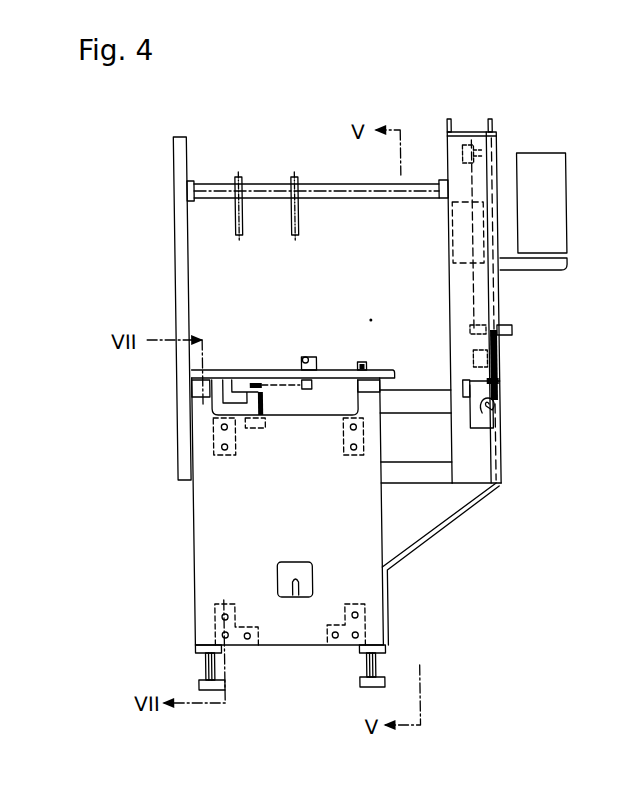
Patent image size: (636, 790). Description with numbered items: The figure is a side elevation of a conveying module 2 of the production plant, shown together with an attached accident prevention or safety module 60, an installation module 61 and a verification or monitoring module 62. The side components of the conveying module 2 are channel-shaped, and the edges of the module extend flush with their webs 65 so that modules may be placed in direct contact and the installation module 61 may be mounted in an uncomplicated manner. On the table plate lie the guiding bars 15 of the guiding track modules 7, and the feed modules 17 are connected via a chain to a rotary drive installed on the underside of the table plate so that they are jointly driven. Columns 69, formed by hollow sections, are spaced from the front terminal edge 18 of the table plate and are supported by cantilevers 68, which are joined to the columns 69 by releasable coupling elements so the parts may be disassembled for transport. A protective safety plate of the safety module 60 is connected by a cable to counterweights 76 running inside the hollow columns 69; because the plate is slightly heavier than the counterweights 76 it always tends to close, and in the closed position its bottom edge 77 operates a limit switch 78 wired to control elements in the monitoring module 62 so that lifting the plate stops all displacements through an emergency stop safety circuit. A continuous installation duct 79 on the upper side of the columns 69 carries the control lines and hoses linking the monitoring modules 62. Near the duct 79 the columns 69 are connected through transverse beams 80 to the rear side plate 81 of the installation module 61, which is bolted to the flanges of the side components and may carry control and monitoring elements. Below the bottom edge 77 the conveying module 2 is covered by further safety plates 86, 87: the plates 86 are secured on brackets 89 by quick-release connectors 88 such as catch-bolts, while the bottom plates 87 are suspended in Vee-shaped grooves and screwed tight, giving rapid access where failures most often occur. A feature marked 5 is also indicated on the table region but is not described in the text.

The conveying module 2 is at (309, 171).
The table support 5 is at (378, 367).
The guiding track module 7 is at (366, 356).
The guiding bar 15 is at (363, 365).
The feed module 17 is at (305, 357).
The front terminal edge 18 is at (398, 373).
The safety module 60 is at (472, 115).
The installation module 61 is at (187, 167).
The verification or monitoring module 62 is at (568, 172).
The web 65 is at (290, 623).
The cantilever 68 is at (417, 400).
The column 69 is at (477, 470).
The counterweight 76 is at (461, 240).
The bottom edge 77 is at (505, 335).
The limit switch 78 is at (500, 377).
The installation duct 79 is at (489, 123).
The transverse beam 80 is at (259, 186).
The rear side plate 81 is at (176, 165).
The safety plate 86 is at (488, 400).
The bottom plate 87 is at (498, 480).
The quick-release connector 88 is at (495, 382).
The bracket 89 is at (477, 427).